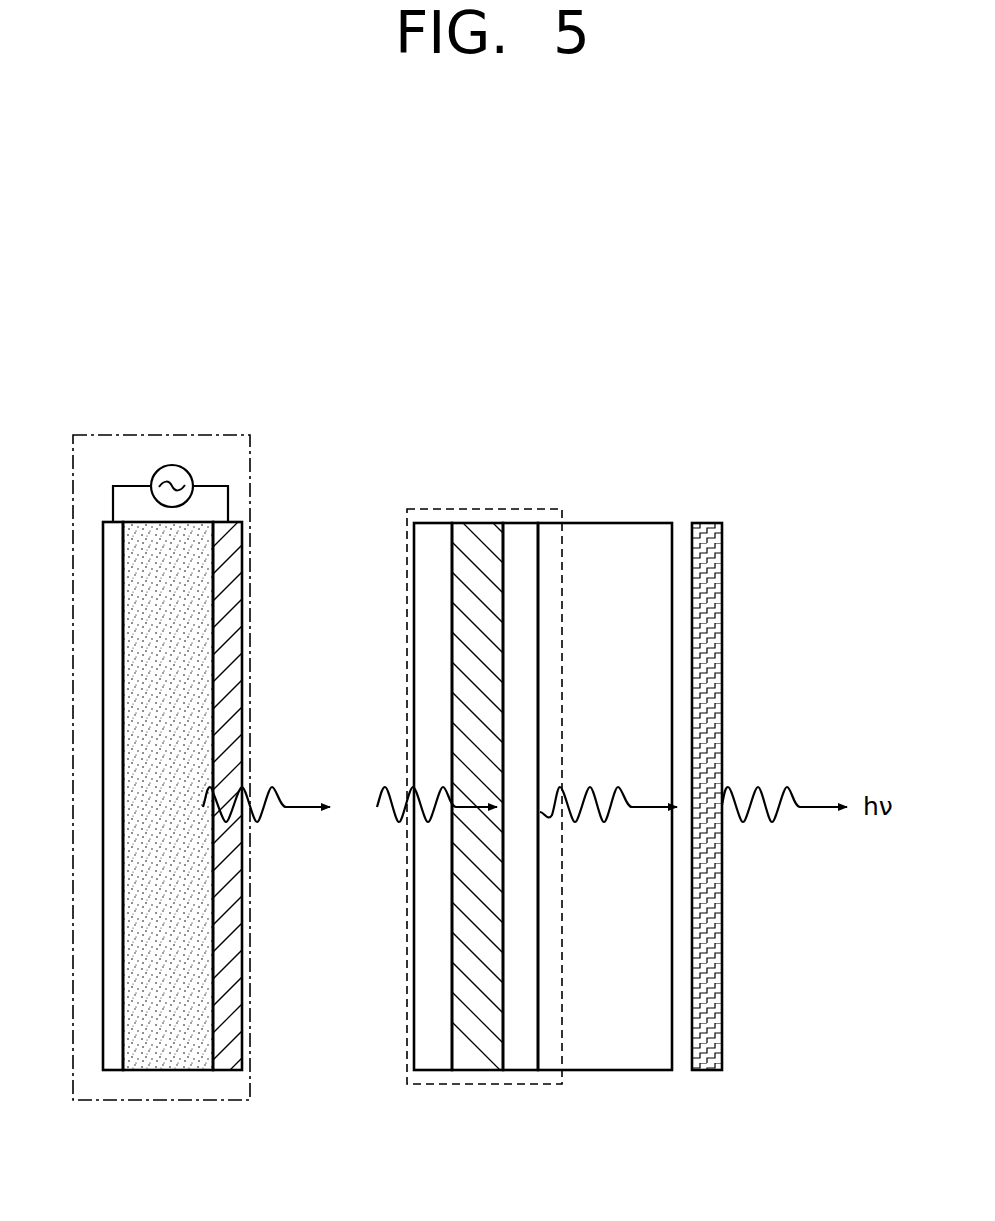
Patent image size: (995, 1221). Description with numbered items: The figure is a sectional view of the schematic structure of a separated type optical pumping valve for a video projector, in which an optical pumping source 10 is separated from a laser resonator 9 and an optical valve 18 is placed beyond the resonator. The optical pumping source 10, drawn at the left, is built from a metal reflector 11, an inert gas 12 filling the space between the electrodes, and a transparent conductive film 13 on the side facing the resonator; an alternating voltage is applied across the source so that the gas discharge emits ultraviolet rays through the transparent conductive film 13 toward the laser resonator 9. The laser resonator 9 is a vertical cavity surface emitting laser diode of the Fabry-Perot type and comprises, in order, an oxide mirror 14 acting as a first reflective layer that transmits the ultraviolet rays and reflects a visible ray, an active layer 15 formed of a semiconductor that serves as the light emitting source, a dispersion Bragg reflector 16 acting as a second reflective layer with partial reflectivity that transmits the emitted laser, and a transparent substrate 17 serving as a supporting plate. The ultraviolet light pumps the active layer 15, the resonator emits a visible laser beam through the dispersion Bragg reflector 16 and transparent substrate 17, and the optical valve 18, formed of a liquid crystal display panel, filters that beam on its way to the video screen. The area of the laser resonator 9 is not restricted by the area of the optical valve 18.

The laser resonator 9 is at (506, 507).
The ultraviolet discharge lamp 10 is at (171, 433).
The metal reflector 11 is at (107, 1062).
The inert gas 12 is at (158, 1062).
The transparent conductive film 13 is at (222, 1062).
The oxide mirror 14 is at (432, 1062).
The active layer 15 is at (478, 1062).
The dispersion Bragg reflector 16 is at (523, 1062).
The transparent substrate 17 is at (610, 1062).
The optical valve 18 is at (704, 1070).